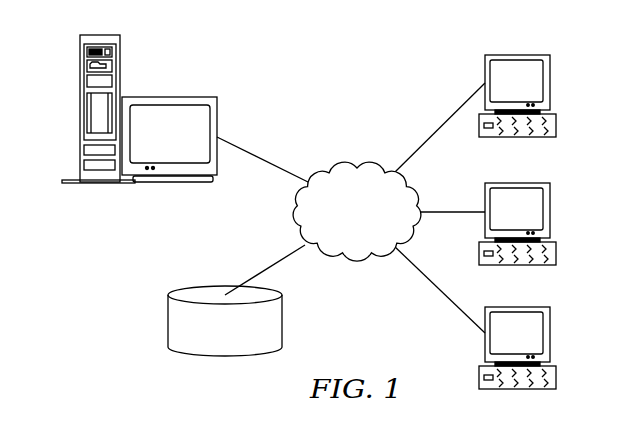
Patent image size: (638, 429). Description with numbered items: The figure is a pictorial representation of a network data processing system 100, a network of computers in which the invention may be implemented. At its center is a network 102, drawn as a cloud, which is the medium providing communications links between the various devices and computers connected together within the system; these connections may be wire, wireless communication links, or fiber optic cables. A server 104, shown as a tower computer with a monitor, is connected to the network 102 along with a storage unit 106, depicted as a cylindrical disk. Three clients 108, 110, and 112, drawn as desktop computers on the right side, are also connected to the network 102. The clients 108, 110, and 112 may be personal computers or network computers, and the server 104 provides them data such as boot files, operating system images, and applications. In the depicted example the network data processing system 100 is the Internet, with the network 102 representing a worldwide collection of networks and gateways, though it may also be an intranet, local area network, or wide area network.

The network data processing system 100 is at (402, 62).
The network 102 is at (330, 165).
The server 104 is at (80, 109).
The storage unit 106 is at (168, 320).
The client 108 is at (550, 80).
The client 110 is at (550, 208).
The client 112 is at (550, 336).